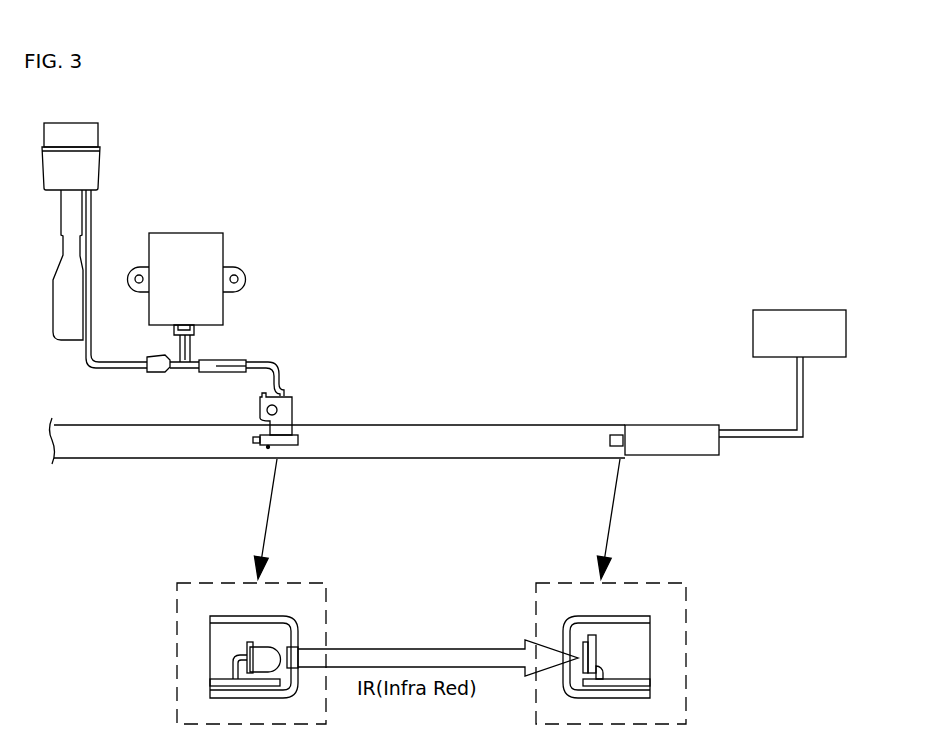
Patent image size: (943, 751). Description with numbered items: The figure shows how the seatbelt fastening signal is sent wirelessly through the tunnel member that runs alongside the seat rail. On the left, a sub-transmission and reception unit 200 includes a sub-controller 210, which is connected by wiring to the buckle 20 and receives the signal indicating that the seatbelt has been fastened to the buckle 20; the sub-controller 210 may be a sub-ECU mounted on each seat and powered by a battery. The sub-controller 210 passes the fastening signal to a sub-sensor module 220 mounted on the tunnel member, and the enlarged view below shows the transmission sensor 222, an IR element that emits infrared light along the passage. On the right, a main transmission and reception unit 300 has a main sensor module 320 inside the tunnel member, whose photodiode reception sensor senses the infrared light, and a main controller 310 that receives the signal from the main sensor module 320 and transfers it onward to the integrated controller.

The buckle 20 is at (93, 165).
The sub-transmission and reception unit 200 is at (276, 328).
The sub-controller 210 is at (211, 253).
The sub-sensor module 220 is at (297, 440).
The transmission sensor 222 is at (266, 657).
The main transmission and reception unit 300 is at (721, 344).
The main controller 310 is at (773, 318).
The main sensor module 320 is at (614, 435).